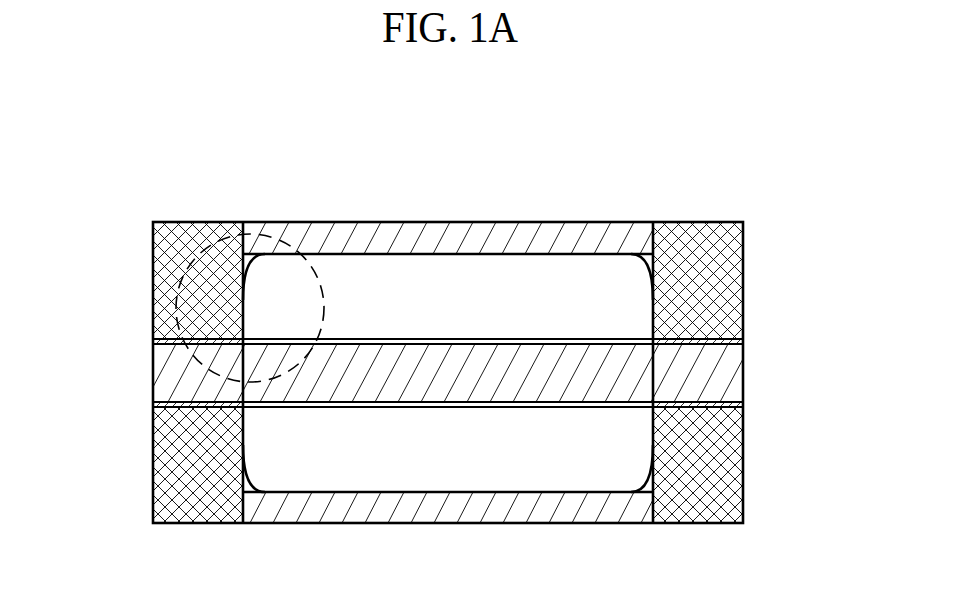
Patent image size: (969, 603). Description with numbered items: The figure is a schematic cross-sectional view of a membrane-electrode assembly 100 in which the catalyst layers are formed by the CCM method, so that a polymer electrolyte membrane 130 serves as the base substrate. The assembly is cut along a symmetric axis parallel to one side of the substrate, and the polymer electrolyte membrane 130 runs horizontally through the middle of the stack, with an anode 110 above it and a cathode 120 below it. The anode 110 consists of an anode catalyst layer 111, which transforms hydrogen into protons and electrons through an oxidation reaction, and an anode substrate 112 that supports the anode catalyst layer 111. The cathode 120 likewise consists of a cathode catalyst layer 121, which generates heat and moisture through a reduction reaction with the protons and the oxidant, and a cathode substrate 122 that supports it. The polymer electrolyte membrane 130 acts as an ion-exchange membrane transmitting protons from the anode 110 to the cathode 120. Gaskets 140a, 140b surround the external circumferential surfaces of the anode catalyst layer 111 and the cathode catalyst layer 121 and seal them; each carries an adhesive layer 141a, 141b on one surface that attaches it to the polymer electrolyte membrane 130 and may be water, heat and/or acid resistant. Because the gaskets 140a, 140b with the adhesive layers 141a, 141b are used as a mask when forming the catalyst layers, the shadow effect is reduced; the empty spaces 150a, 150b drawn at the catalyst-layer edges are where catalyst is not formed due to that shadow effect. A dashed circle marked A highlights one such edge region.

The membrane-electrode assembly 100 is at (468, 122).
The anode 110 is at (577, 222).
The anode catalyst layer 111 is at (432, 268).
The anode substrate 112 is at (513, 228).
The cathode 120 is at (361, 526).
The cathode catalyst layer 121 is at (560, 478).
The cathode substrate 122 is at (492, 521).
The polymer electrolyte membrane 130 is at (745, 371).
The gasket 140a is at (153, 291).
The gasket 140b is at (153, 464).
The adhesive layer 141a is at (153, 341).
The adhesive layer 141b is at (153, 405).
The empty space 150a is at (255, 257).
The empty space 150b is at (256, 487).
The enlarged region A is at (283, 239).